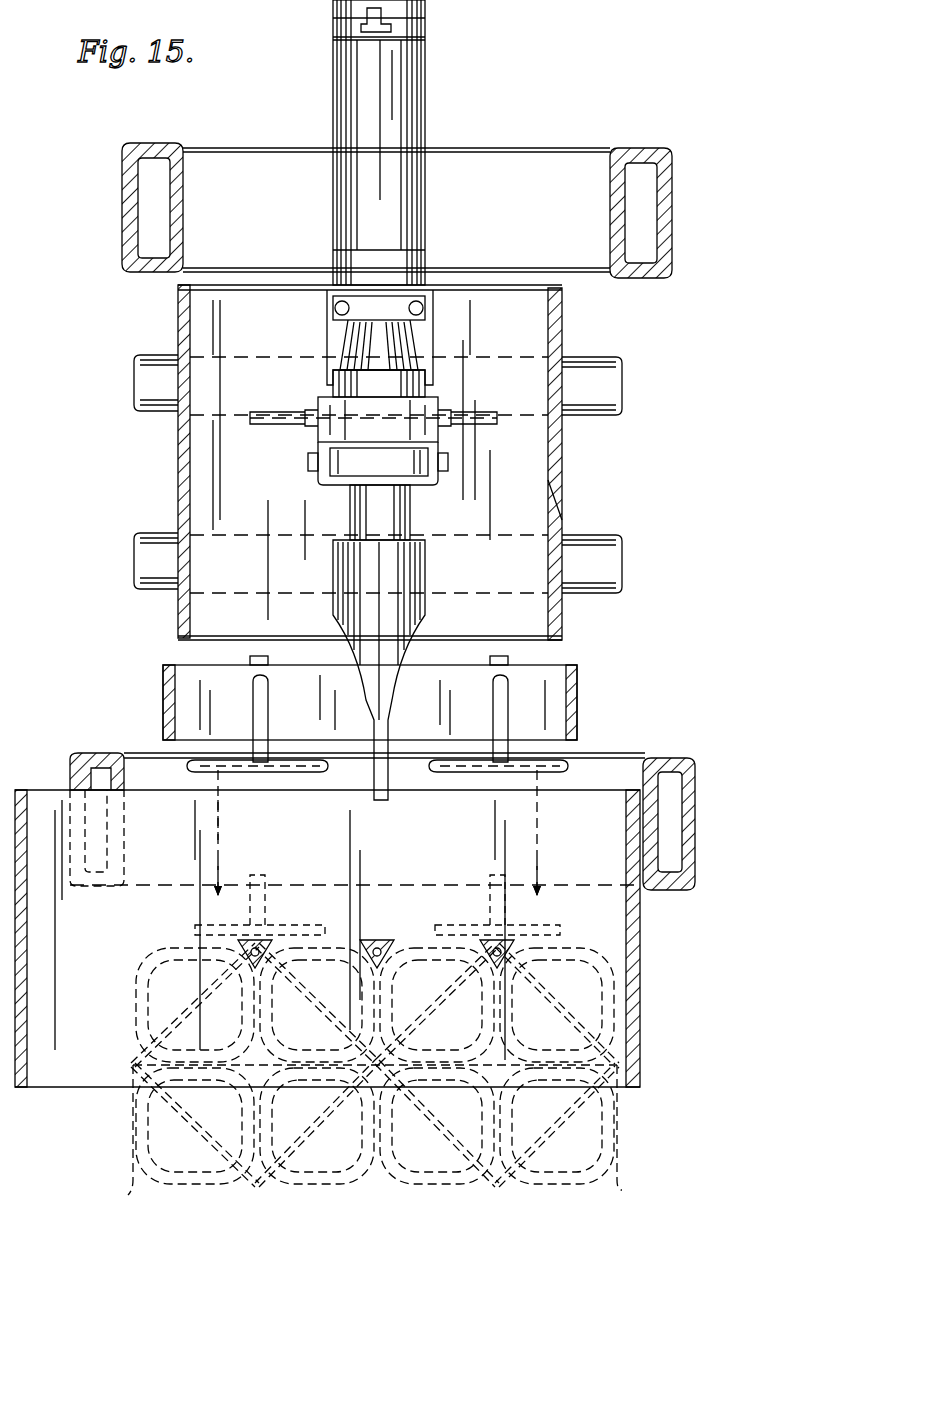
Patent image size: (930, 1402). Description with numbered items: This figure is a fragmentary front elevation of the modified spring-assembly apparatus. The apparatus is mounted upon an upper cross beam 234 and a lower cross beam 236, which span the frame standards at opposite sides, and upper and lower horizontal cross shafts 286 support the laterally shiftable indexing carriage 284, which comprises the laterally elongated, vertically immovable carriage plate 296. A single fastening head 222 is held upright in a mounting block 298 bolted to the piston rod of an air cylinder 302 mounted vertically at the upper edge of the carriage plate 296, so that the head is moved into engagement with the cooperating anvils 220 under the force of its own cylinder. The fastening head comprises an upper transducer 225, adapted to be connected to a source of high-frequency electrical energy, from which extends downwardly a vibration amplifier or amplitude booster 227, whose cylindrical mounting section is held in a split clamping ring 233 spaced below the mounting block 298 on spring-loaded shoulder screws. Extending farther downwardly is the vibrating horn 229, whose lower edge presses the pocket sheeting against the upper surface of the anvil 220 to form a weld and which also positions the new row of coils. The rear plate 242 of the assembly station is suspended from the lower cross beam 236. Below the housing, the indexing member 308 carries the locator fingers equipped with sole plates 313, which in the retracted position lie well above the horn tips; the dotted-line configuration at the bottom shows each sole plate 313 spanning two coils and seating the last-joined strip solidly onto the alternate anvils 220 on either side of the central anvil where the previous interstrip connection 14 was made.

The air cylinder 302 is at (425, 14).
The upper transducer 225 is at (415, 95).
The upper cross beam 234 is at (672, 218).
The vibration amplifier 227 is at (352, 350).
The horizontal cross shafts 286 is at (605, 385).
The mounting block 298 is at (425, 413).
The split clamping ring 233 is at (450, 462).
The indexing carriage 284 is at (575, 456).
The carriage plate 296 is at (540, 502).
The fastening head 222 is at (428, 522).
The vibrating horn 229 is at (336, 595).
The presser plate 308 is at (557, 695).
The sole plates 313 is at (560, 768).
The lower cross beam 236 is at (695, 840).
The anvils 220 is at (378, 942).
The rear plate 242 is at (625, 955).
The interstrip connections 14 is at (377, 1064).